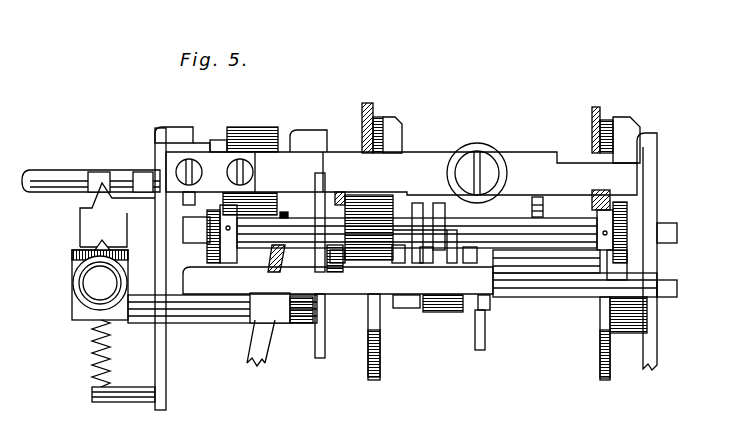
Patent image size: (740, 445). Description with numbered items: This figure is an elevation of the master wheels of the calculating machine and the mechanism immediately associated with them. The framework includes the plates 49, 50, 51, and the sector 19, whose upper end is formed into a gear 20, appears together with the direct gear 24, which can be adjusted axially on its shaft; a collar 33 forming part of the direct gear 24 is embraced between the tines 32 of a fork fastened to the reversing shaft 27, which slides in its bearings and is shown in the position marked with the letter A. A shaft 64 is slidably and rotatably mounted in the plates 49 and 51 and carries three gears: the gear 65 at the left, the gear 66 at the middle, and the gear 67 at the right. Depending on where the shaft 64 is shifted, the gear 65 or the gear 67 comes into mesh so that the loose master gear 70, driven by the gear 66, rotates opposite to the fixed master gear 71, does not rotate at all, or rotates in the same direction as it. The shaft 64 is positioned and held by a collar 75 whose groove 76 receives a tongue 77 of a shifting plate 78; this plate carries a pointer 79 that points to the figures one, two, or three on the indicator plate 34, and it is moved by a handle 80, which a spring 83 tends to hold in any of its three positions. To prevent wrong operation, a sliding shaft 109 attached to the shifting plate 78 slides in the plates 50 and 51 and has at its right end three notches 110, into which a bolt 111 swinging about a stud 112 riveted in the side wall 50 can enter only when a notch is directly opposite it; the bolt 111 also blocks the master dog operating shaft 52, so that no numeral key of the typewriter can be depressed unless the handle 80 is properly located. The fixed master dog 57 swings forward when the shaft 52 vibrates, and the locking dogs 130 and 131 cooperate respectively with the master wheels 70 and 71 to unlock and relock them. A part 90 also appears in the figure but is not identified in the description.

The sector 19 is at (263, 343).
The sector gear 20 is at (285, 213).
The direct gear 24 is at (250, 133).
The reversing shaft 27 is at (60, 178).
The tines 32 is at (212, 142).
The collar 33 is at (193, 142).
The indicator plate 34 is at (102, 197).
The plate 49 is at (163, 155).
The plate 50 is at (658, 193).
The plate 51 is at (363, 351).
The master dog operating shaft 52 is at (525, 258).
The fixed master dog 57 is at (597, 107).
The shifting shaft 64 is at (567, 232).
The gear 65 is at (213, 253).
The gear 66 is at (352, 205).
The gear 67 is at (627, 210).
The loose master gear 70 is at (380, 117).
The fixed master gear 71 is at (607, 120).
The collar 75 is at (447, 210).
The groove 76 is at (425, 215).
The tongue 77 is at (430, 230).
The shifting plate 78 is at (387, 285).
The pointer 79 is at (80, 247).
The handle 80 is at (92, 282).
The spring 83 is at (95, 347).
The post 90 is at (363, 110).
The sliding shaft 109 is at (545, 288).
The notches 110 is at (620, 280).
The bolt 111 is at (705, 268).
The stud 112 is at (713, 321).
The locking dog 130 is at (403, 413).
The locking dog 131 is at (603, 378).